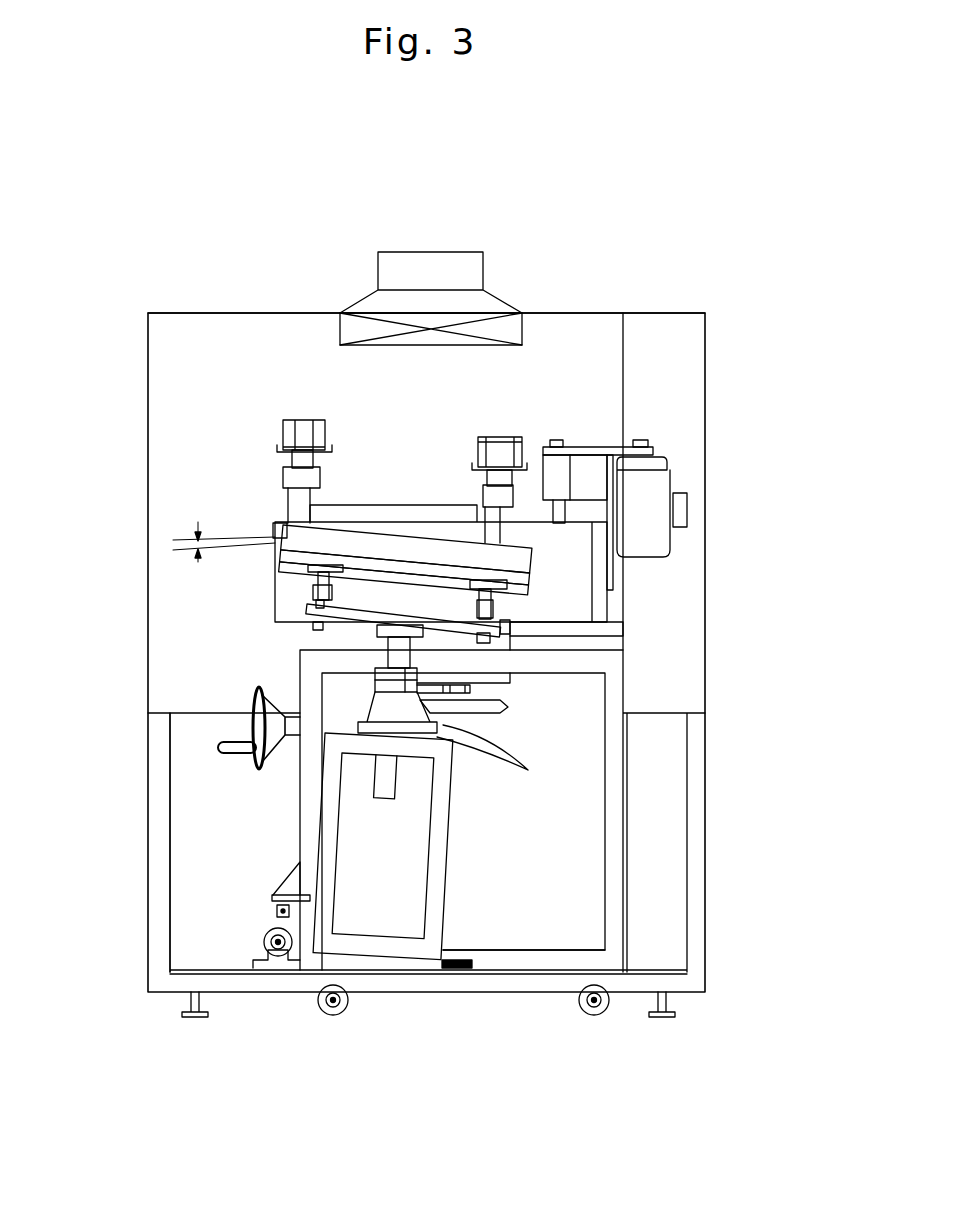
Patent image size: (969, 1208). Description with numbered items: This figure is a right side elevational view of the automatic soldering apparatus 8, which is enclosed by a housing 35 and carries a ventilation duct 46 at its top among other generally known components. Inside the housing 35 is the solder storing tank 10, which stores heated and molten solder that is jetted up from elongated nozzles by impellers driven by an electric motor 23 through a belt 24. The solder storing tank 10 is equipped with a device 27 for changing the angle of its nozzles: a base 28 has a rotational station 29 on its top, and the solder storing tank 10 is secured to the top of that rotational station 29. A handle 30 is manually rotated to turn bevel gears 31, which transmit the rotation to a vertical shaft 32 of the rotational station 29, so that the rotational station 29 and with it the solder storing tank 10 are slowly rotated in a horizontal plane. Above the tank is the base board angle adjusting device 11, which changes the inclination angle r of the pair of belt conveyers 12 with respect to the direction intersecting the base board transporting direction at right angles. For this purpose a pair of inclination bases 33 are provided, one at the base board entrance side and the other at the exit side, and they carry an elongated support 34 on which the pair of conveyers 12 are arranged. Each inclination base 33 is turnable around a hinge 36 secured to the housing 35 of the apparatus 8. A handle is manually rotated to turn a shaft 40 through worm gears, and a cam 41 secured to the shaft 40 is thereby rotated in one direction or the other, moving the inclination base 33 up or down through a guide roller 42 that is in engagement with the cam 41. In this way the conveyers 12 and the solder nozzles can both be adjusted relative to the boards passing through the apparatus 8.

The automatic soldering apparatus 8 is at (627, 307).
The solder storing tank 10 is at (607, 589).
The base board angle adjusting device 11 is at (457, 889).
The belt conveyers 12 is at (477, 453).
The electric motor 23 is at (686, 488).
The belt 24 is at (608, 440).
The device for changing the angle of the nozzles 27 is at (232, 772).
The base 28 is at (627, 838).
The rotational station 29 is at (623, 636).
The handle 30 is at (253, 690).
The bevel gears 31 is at (528, 770).
The vertical shaft 32 is at (470, 690).
The inclination base 33 is at (452, 827).
The elongated support 34 is at (275, 538).
The housing 35 is at (707, 937).
The hinge 36 is at (438, 968).
The shaft 40 is at (278, 948).
The cam 41 is at (264, 930).
The guide roller 42 is at (281, 911).
The ventilation duct 46 is at (458, 252).
The inclination angle r is at (224, 554).